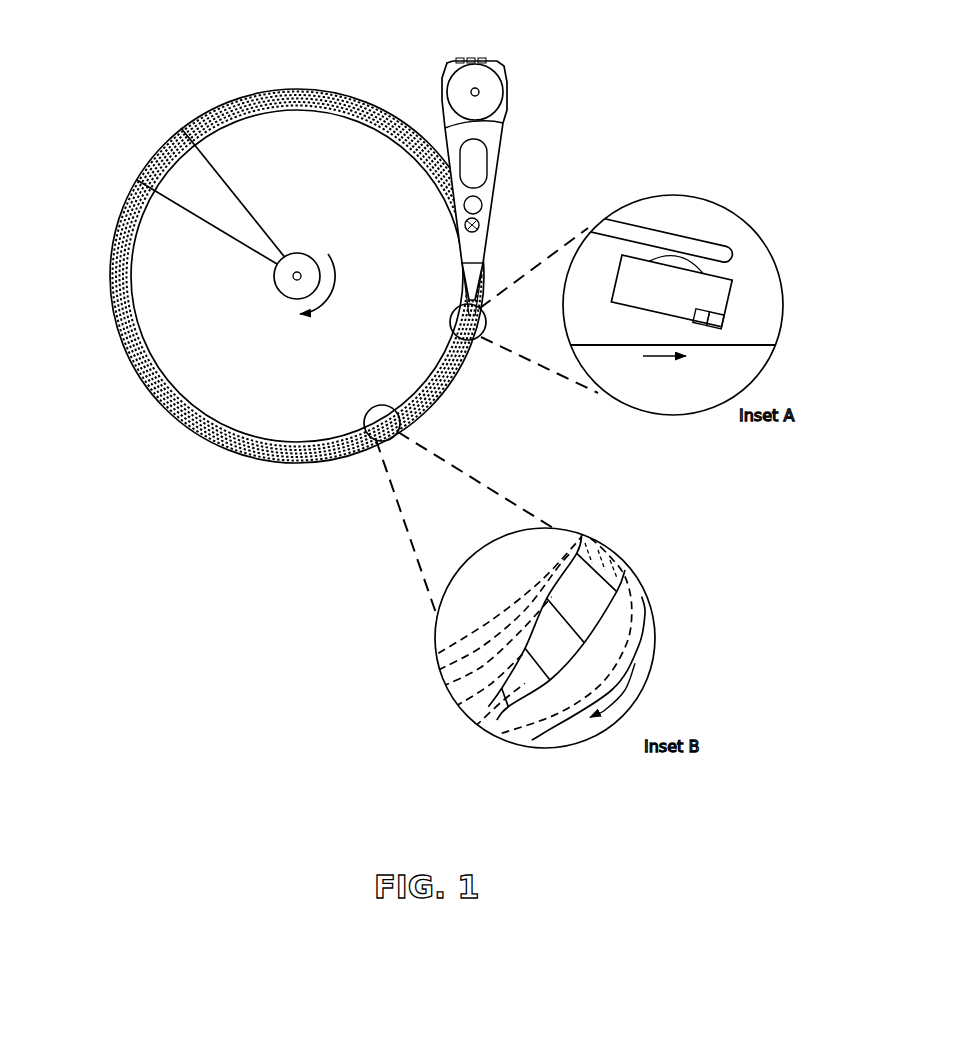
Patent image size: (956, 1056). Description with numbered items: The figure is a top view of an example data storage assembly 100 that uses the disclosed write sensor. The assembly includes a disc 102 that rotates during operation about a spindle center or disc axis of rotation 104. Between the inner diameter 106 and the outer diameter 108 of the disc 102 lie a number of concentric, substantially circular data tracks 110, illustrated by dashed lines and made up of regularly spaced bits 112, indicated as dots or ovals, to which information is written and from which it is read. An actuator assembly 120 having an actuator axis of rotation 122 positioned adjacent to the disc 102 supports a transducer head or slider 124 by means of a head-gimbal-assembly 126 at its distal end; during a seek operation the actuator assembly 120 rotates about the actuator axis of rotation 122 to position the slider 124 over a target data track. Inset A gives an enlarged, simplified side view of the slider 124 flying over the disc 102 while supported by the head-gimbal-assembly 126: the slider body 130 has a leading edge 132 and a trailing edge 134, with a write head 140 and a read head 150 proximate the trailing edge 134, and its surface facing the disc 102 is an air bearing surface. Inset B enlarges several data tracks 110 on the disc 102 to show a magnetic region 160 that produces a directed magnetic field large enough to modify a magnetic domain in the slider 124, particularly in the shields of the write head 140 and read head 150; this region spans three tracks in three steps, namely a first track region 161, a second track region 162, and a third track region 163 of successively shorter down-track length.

The data storage assembly 100 is at (143, 63).
The disc 102 is at (330, 92).
The disc axis of rotation 104 is at (137, 180).
The inner diameter 106 is at (181, 130).
The outer diameter 108 is at (243, 97).
The data tracks 110 is at (141, 372).
The bits 112 is at (188, 425).
The actuator assembly 120 is at (505, 148).
The actuator axis of rotation 122 is at (480, 91).
The slider 124 is at (455, 328).
The head-gimbal-assembly 126 is at (463, 284).
The slider body 130 is at (740, 297).
The leading edge 132 is at (650, 262).
The trailing edge 134 is at (718, 316).
The write head 140 is at (718, 328).
The read head 150 is at (697, 322).
The magnetic region 160 is at (619, 600).
The first track region 161 is at (502, 693).
The second track region 162 is at (613, 578).
The third track region 163 is at (583, 553).